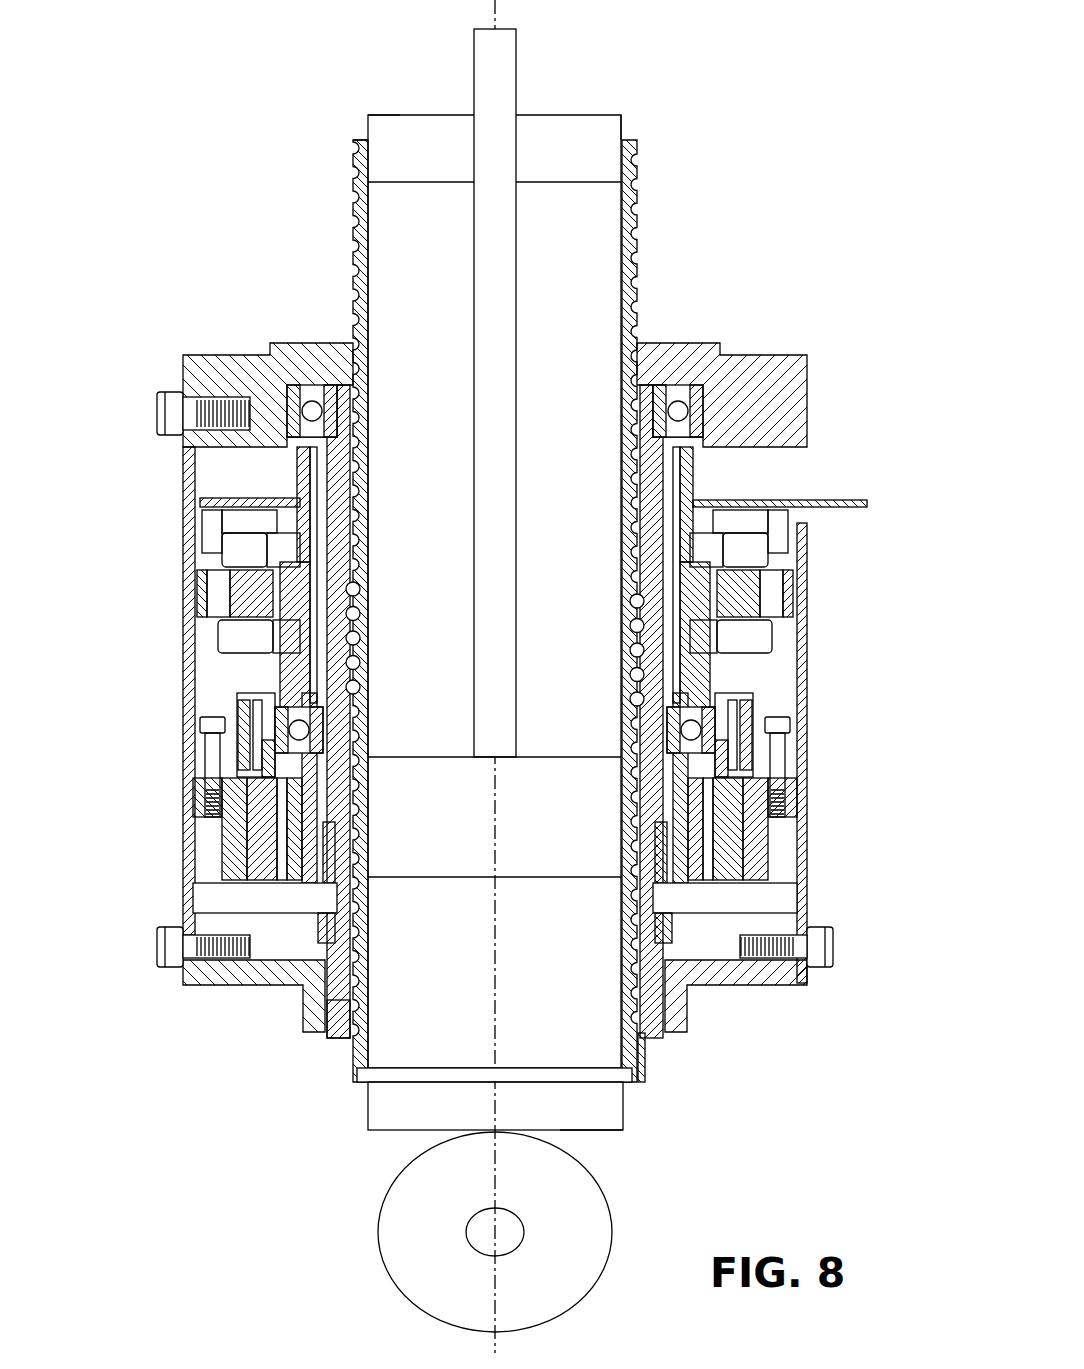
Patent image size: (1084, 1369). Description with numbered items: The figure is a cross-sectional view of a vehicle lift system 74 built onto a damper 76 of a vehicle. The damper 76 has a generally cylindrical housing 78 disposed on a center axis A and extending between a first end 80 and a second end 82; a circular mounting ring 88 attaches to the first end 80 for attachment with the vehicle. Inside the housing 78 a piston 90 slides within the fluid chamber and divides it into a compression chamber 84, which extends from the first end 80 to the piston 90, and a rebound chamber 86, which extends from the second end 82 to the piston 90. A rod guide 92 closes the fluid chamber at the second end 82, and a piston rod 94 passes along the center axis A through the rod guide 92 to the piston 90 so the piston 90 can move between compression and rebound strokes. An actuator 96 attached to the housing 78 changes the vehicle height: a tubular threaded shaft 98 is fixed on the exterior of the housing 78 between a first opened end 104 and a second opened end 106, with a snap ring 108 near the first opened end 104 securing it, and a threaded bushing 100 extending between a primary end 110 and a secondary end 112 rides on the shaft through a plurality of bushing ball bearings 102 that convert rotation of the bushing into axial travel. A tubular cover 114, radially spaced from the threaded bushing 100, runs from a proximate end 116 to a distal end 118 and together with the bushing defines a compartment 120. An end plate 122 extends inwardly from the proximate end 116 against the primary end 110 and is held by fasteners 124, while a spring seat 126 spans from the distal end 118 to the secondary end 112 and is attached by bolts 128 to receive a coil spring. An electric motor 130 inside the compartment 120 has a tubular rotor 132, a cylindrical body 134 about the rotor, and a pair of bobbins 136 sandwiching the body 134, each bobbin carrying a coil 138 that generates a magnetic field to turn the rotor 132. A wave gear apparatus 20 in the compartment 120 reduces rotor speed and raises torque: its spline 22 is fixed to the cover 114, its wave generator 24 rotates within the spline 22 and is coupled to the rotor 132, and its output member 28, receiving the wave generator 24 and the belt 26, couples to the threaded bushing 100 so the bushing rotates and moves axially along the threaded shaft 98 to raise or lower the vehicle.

The center axis A is at (505, 38).
The vehicle lift system 74 is at (268, 155).
The damper 76 is at (628, 125).
The housing 78 is at (353, 205).
The first end 80 is at (610, 1130).
The second end 82 is at (368, 114).
The compression chamber 84 is at (620, 1040).
The rebound chamber 86 is at (628, 218).
The mounting ring 88 is at (405, 1270).
The piston 90 is at (400, 770).
The rod guide 92 is at (410, 128).
The piston rod 94 is at (510, 310).
The actuator 96 is at (183, 570).
The threaded shaft 98 is at (638, 272).
The threaded bushing 100 is at (345, 470).
The bushing ball bearings 102 is at (357, 690).
The first opened end 104 is at (357, 1075).
The second opened end 106 is at (362, 142).
The snap ring 108 is at (385, 1090).
The primary end 110 is at (335, 1030).
The secondary end 112 is at (330, 380).
The cover 114 is at (195, 872).
The proximate end 116 is at (180, 965).
The distal end 118 is at (185, 387).
The compartment 120 is at (795, 907).
The end plate 122 is at (745, 987).
The fasteners 124 is at (822, 953).
The spring seat 126 is at (785, 355).
The bolts 128 is at (160, 408).
The electric motor 130 is at (195, 540).
The rotor 132 is at (800, 572).
The body 134 is at (760, 595).
The bobbins 136 is at (208, 630).
The coil 138 is at (740, 540).
The wave gear apparatus 20 is at (205, 838).
The spline 22 is at (790, 790).
The wave generator 24 is at (290, 810).
The belt 26 is at (742, 845).
The output member 28 is at (770, 818).